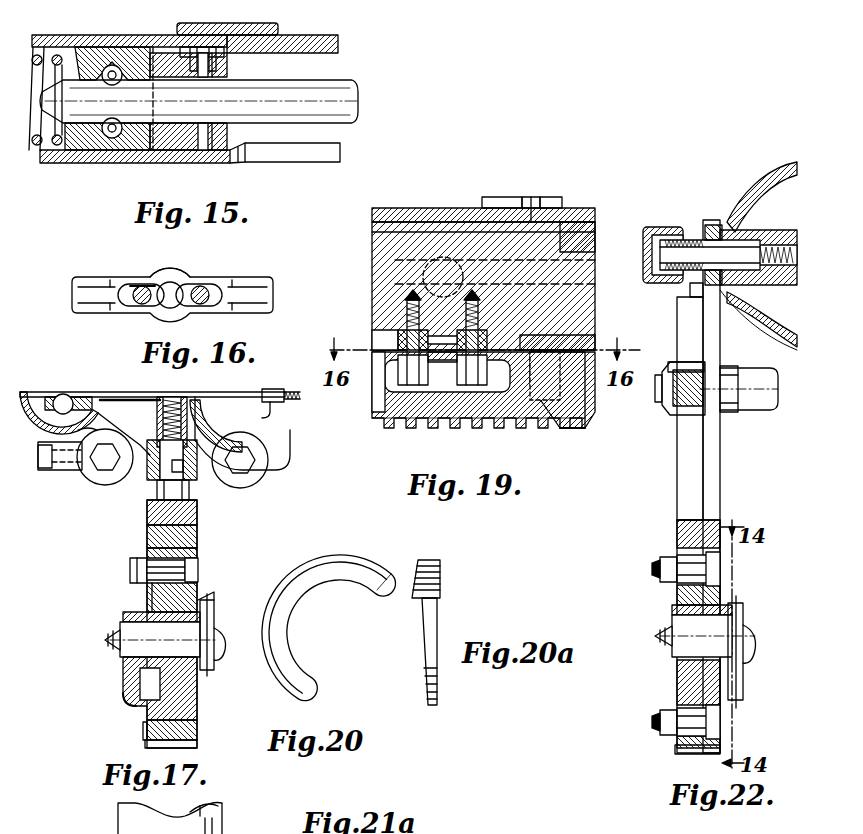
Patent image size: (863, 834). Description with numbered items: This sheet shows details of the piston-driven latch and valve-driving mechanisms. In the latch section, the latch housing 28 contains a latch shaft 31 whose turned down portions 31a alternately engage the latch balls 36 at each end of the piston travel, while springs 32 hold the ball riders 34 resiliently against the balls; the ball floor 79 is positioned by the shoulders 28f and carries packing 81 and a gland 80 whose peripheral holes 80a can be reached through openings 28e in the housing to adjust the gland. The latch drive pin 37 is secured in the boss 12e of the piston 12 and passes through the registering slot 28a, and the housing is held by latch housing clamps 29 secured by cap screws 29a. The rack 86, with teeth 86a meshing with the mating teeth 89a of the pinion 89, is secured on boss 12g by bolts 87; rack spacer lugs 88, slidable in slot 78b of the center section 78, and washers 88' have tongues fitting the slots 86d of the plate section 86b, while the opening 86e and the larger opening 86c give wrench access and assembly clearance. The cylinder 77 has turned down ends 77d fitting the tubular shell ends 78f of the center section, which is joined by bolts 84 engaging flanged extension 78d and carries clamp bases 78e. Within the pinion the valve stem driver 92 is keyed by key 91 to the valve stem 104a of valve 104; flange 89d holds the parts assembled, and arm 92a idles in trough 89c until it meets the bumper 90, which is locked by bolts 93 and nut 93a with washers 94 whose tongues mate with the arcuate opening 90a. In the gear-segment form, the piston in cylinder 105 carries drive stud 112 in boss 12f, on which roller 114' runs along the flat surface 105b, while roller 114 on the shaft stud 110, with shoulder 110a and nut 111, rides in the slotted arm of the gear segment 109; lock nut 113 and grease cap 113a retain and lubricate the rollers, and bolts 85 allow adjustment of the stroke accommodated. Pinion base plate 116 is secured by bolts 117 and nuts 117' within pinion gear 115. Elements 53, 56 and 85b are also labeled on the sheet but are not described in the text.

In FIG. 17, the piston 12 is at (182, 397).
In FIG. 19, the piston 12 is at (398, 275).
In FIG. 17, the boss 12e is at (140, 397).
In FIG. 22, the boss 12f is at (780, 232).
In FIG. 17, the boss 12g is at (222, 397).
In FIG. 19, the boss 12g is at (398, 310).
In FIG. 15, the latch housing 28 is at (338, 46).
In FIG. 17, the latch housing 28 is at (38, 392).
In FIG. 15, the slot 28a is at (276, 153).
In FIG. 15, the openings 28e is at (196, 45).
In FIG. 15, the shoulders 28f is at (162, 152).
In FIG. 15, the latch housing clamps 29 is at (278, 28).
In FIG. 17, the latch housing clamps 29 is at (24, 410).
In FIG. 17, the cap screws 29a is at (43, 472).
In FIG. 15, the latch shaft 31 is at (335, 101).
In FIG. 17, the latch shaft 31 is at (59, 395).
In FIG. 15, the turned down portions 31a is at (88, 56).
In FIG. 15, the springs 32 is at (33, 140).
In FIG. 15, the ball riders 34 is at (78, 164).
In FIG. 15, the latch balls 36 is at (112, 64).
In FIG. 17, the latch drive pin 37 is at (103, 392).
In FIG. 21A, the lever 53 is at (222, 823).
In FIG. 21A, the lever pivot 56 is at (224, 804).
In FIG. 19, the cylinder 77 is at (596, 220).
In FIG. 19, the turned down ends 77d is at (566, 225).
In FIG. 17, the center section 78 is at (290, 430).
In FIG. 19, the center section 78 is at (416, 212).
In FIG. 19, the slot 78b is at (378, 337).
In FIG. 17, the flanged extension 78d is at (258, 450).
In FIG. 19, the flanged extension 78d is at (500, 200).
In FIG. 17, the clamp bases 78e is at (76, 486).
In FIG. 19, the tubular shell ends 78f is at (525, 205).
In FIG. 15, the ball floor 79 is at (120, 151).
In FIG. 15, the gland 80 is at (197, 165).
In FIG. 15, the peripheral holes 80a is at (230, 166).
In FIG. 15, the packing 81 is at (184, 153).
In FIG. 17, the bolts 84 is at (252, 470).
In FIG. 19, the bolts 84 is at (548, 202).
In FIG. 17, the bolts 85 is at (300, 396).
In FIG. 17, the fitting passage 85b is at (272, 413).
In FIG. 16, the rack 86 is at (100, 285).
In FIG. 17, the rack 86 is at (198, 530).
In FIG. 19, the rack 86 is at (565, 400).
In FIG. 19, the teeth 86a is at (400, 430).
In FIG. 16, the plate section 86b is at (163, 272).
In FIG. 16, the opening 86c is at (180, 300).
In FIG. 19, the opening 86c is at (392, 380).
In FIG. 16, the slots 86d is at (222, 293).
In FIG. 19, the slots 86d is at (538, 400).
In FIG. 19, the opening 86e is at (380, 400).
In FIG. 16, the bolts 87 is at (205, 288).
In FIG. 17, the bolts 87 is at (157, 493).
In FIG. 19, the bolts 87 is at (415, 385).
In FIG. 17, the rack spacer lugs 88 is at (206, 476).
In FIG. 19, the rack spacer lugs 88 is at (392, 332).
In FIG. 16, the washers 88' is at (131, 317).
In FIG. 17, the washers 88' is at (204, 487).
In FIG. 19, the washers 88' is at (471, 403).
In FIG. 17, the pinion 89 is at (198, 735).
In FIG. 17, the mating teeth 89a is at (197, 746).
In FIG. 17, the trough 89c is at (143, 740).
In FIG. 17, the flange 89d is at (208, 606).
In FIG. 17, the bumper 90 is at (150, 597).
In FIG. 20, the bumper 90 is at (292, 650).
In FIG. 20, the arcuate opening 90a is at (290, 616).
In FIG. 17, the key 91 is at (122, 621).
In FIG. 22, the key 91 is at (672, 621).
In FIG. 17, the valve stem driver 92 is at (185, 672).
In FIG. 17, the arm 92a is at (132, 716).
In FIG. 17, the bolts 93 is at (190, 568).
In FIG. 17, the nut 93a is at (140, 566).
In FIG. 17, the washers 94 is at (130, 576).
In FIG. 21A, the washers 94 is at (485, 833).
In FIG. 17, the valve 104 is at (214, 613).
In FIG. 22, the valve 104 is at (743, 621).
In FIG. 17, the valve stem 104a is at (127, 655).
In FIG. 22, the valve stem 104a is at (678, 653).
In FIG. 22, the cylinder 105 is at (791, 163).
In FIG. 22, the flat surface 105b is at (728, 292).
In FIG. 22, the gear segment 109 is at (690, 510).
In FIG. 22, the shaft stud 110 is at (668, 372).
In FIG. 22, the shoulder 110a is at (728, 415).
In FIG. 22, the nut 111 is at (676, 416).
In FIG. 22, the drive stud 112 is at (690, 290).
In FIG. 22, the lock nut 113 is at (696, 242).
In FIG. 22, the grease cap 113a is at (656, 230).
In FIG. 22, the roller 114 is at (700, 213).
In FIG. 22, the roller 114' is at (708, 221).
In FIG. 22, the pinion gear 115 is at (678, 749).
In FIG. 22, the pinion base plate 116 is at (680, 678).
In FIG. 22, the bolts 117 is at (728, 645).
In FIG. 22, the nuts 117' is at (646, 646).